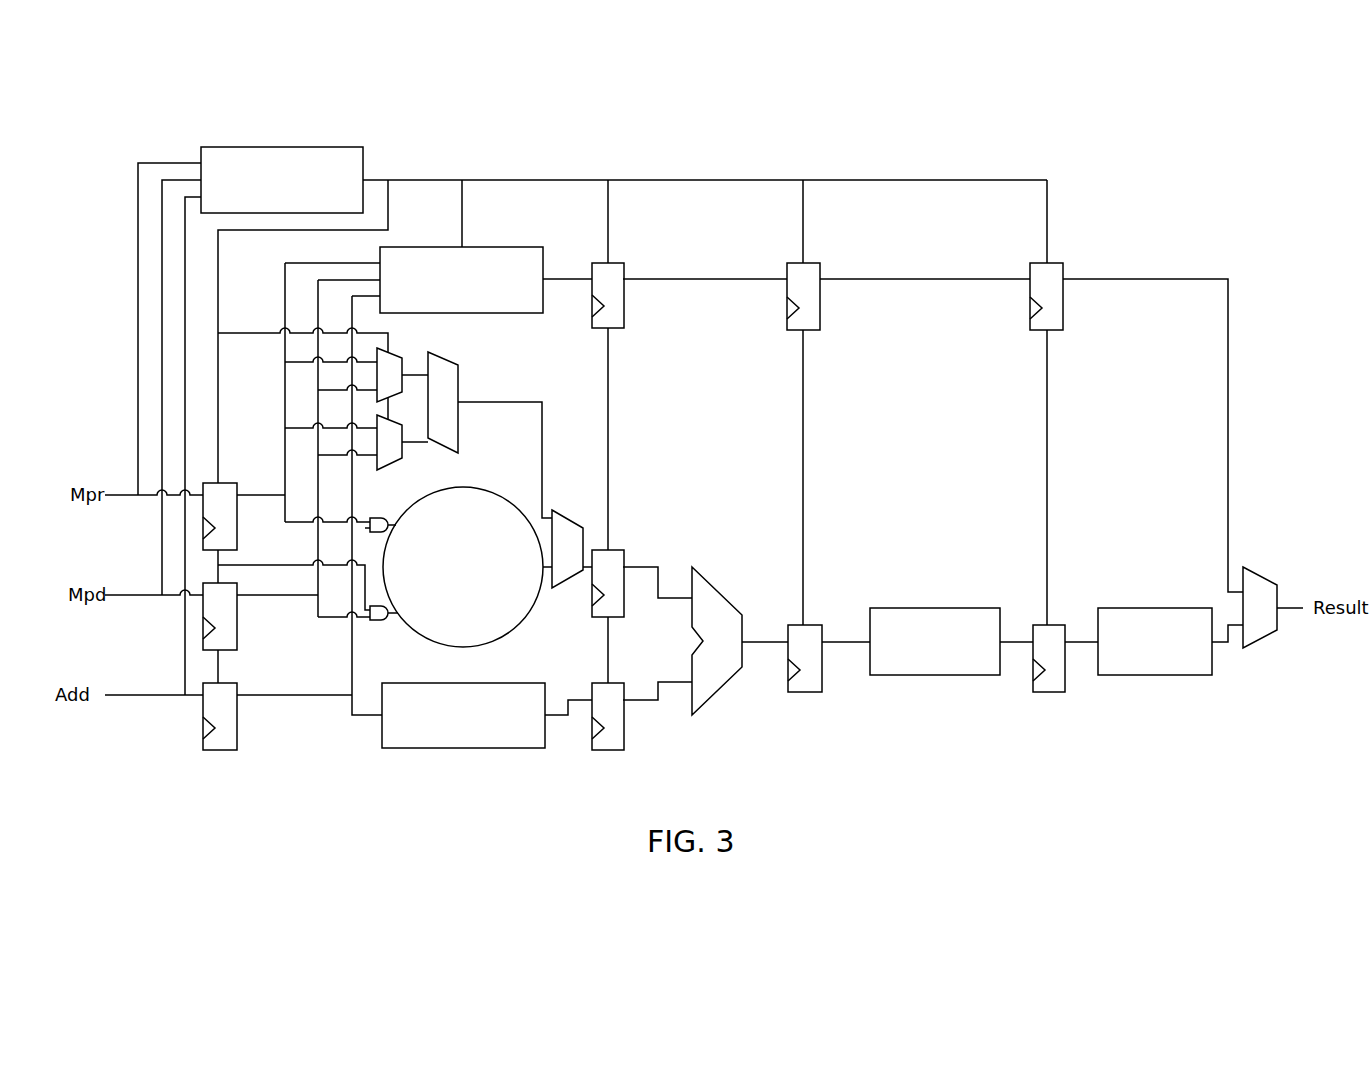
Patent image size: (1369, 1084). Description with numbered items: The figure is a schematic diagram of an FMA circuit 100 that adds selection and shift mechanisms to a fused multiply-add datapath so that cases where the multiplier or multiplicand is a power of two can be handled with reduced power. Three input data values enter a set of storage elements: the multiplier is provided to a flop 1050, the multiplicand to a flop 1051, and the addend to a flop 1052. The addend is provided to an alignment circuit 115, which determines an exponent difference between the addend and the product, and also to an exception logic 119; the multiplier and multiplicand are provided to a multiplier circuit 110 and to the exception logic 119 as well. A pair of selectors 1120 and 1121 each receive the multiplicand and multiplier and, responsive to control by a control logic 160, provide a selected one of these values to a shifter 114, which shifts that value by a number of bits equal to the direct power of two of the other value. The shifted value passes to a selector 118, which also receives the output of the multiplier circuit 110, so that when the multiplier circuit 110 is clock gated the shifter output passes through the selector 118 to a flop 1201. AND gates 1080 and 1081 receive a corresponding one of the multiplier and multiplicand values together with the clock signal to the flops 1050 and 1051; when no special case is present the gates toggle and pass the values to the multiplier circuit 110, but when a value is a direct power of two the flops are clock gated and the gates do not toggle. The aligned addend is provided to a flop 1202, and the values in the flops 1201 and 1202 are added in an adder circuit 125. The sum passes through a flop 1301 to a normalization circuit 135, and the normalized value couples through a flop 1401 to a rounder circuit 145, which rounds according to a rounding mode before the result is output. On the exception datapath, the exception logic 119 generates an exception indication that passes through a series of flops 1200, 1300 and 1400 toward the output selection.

The FMA circuit 100 is at (1137, 185).
The control logic 160 is at (365, 160).
The exception logic 119 is at (545, 260).
The flop 1200 is at (612, 262).
The flop 1201 is at (615, 550).
The flop 1202 is at (618, 683).
The flop 1300 is at (808, 262).
The flop 1301 is at (808, 625).
The flop 1400 is at (1052, 262).
The flop 1401 is at (1057, 692).
The selector 1120 is at (398, 352).
The selector 1121 is at (392, 465).
The shifter 114 is at (460, 372).
The multiplier circuit 110 is at (473, 488).
The AND gate 1080 is at (379, 516).
The AND gate 1081 is at (378, 622).
The flop 1050 is at (225, 482).
The flop 1051 is at (237, 632).
The flop 1052 is at (225, 682).
The selector 118 is at (560, 512).
The alignment circuit 115 is at (528, 680).
The adder circuit 125 is at (722, 593).
The normalization circuit 135 is at (927, 607).
The rounder circuit 145 is at (1135, 607).